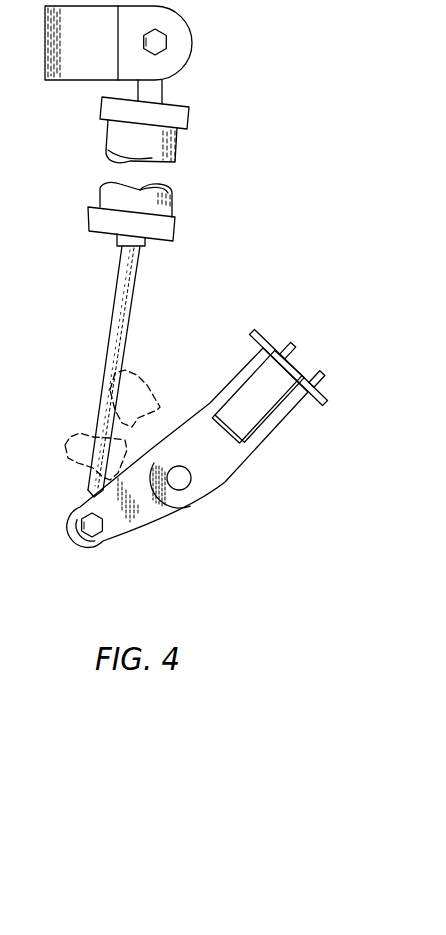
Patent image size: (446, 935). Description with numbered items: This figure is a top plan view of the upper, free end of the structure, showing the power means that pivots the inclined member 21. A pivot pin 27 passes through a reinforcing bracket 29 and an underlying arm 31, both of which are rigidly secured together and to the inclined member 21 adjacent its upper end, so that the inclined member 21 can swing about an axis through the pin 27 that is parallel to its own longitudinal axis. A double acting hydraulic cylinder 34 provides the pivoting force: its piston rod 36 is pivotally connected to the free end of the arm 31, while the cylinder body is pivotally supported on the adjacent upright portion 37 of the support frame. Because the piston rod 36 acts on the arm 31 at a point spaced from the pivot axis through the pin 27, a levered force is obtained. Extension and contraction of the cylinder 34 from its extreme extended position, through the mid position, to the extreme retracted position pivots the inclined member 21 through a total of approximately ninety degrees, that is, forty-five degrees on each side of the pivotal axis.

The inclined member 21 is at (320, 433).
The pivot pin 27 is at (181, 478).
The reinforcing bracket 29 is at (196, 490).
The arm 31 is at (138, 397).
The double acting hydraulic cylinder 34 is at (163, 207).
The piston rod 36 is at (122, 307).
The upright portion 37 is at (75, 67).